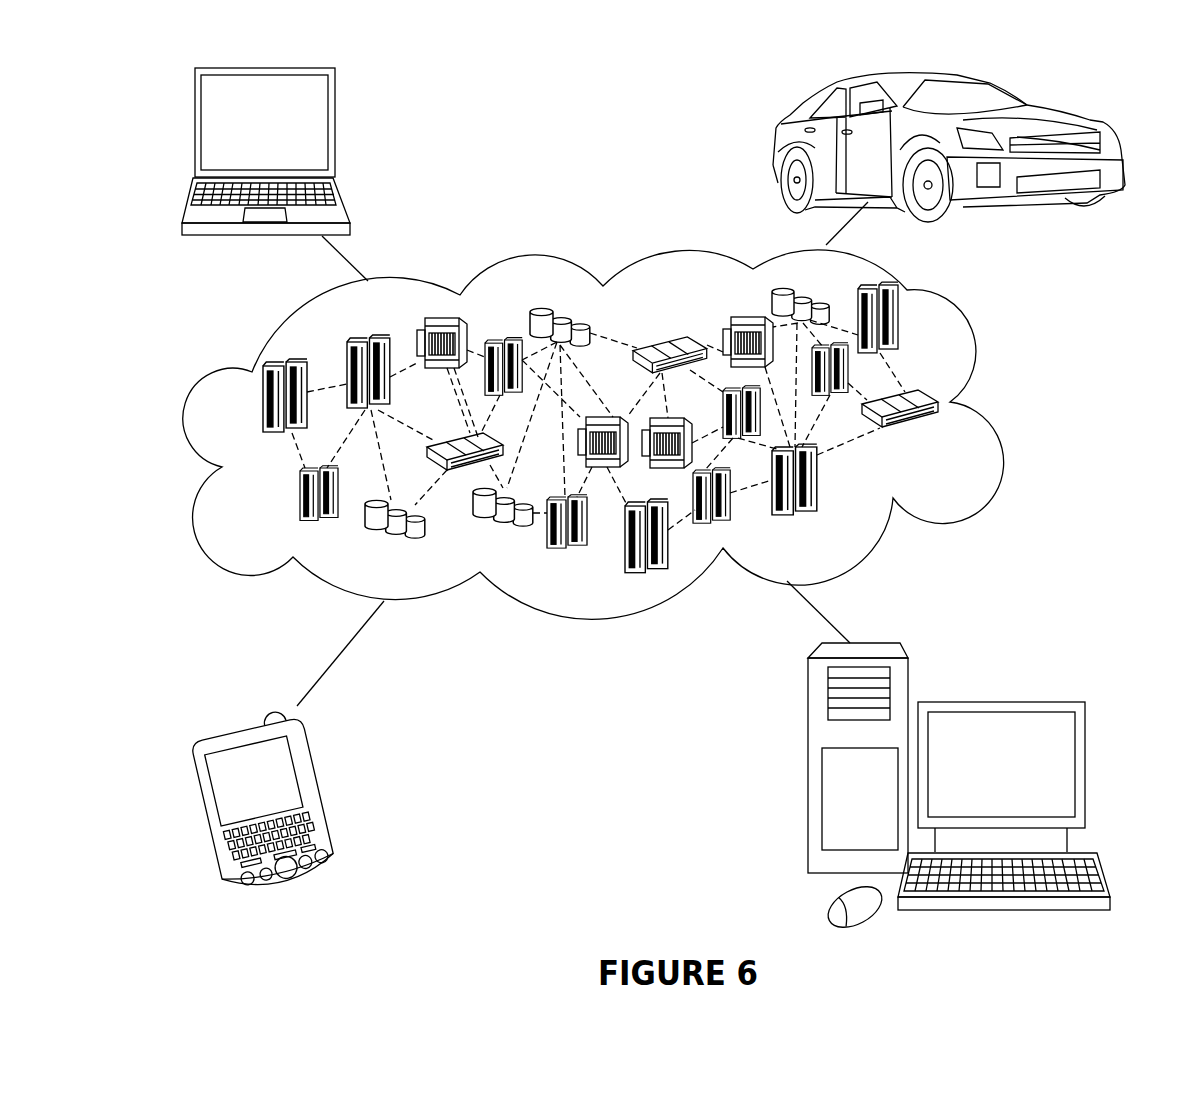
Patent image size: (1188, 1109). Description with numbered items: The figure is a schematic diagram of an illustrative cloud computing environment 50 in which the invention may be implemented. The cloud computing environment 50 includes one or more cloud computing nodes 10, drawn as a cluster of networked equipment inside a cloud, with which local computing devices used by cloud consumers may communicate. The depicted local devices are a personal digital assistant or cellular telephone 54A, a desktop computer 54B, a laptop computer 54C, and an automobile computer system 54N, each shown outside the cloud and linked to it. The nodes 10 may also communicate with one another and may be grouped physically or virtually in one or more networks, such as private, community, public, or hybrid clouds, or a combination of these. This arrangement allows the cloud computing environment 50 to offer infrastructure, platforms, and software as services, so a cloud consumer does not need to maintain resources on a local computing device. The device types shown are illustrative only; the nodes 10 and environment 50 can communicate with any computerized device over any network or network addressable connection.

The cloud computing environment 50 is at (998, 405).
The cloud computing node 10 is at (942, 438).
The personal digital assistant or cellular telephone 54A is at (326, 797).
The desktop computer 54B is at (1000, 700).
The laptop computer 54C is at (340, 126).
The automobile computer system 54N is at (773, 147).